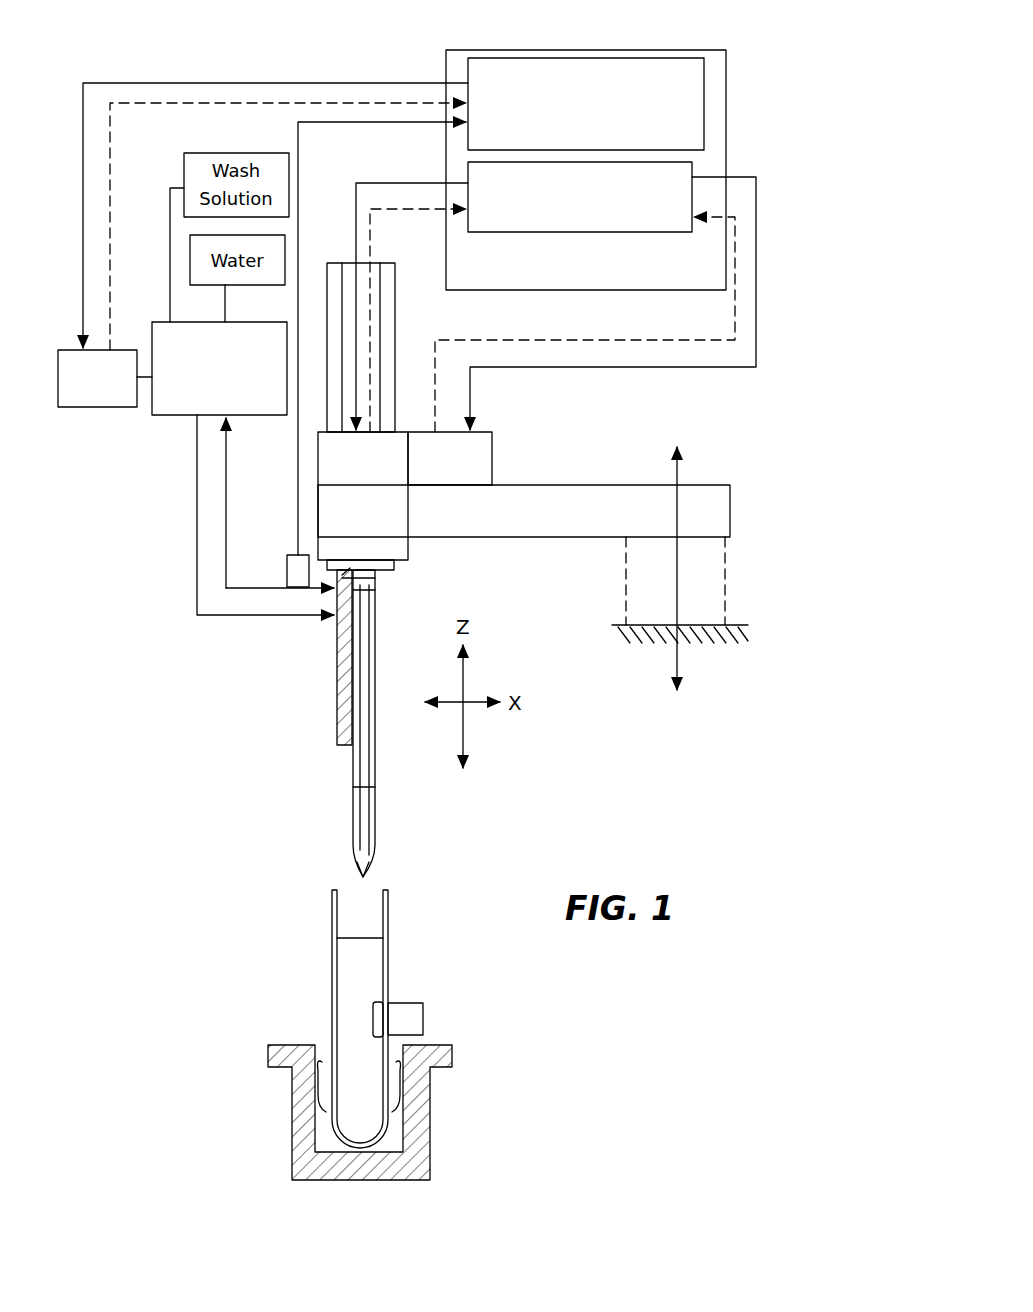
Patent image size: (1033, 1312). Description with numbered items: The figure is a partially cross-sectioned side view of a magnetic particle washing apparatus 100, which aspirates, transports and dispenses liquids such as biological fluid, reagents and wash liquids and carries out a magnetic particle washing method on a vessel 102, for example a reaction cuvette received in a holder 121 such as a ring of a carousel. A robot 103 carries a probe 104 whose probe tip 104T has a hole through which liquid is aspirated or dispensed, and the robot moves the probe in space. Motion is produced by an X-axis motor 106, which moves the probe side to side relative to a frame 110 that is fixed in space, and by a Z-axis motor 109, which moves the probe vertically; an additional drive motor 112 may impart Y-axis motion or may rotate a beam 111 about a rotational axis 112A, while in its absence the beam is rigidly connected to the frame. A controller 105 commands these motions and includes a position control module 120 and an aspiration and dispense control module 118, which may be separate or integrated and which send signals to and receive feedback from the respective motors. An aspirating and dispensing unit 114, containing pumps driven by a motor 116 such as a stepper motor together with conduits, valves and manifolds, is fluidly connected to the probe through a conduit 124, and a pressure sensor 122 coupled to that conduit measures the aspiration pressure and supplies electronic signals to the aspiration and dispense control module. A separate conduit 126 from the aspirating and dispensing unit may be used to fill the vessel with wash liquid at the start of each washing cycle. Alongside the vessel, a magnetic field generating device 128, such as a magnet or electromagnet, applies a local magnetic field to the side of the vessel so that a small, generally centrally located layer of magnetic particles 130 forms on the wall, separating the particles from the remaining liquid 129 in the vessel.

The magnetic particle washing apparatus 100 is at (229, 778).
The vessel 102 is at (392, 952).
The robot 103 is at (333, 260).
The probe 104 is at (343, 770).
The probe tip 104T is at (370, 872).
The controller 105 is at (575, 45).
The X-axis motor 106 is at (492, 433).
The Z-axis motor 109 is at (395, 462).
The frame 110 is at (622, 628).
The beam 111 is at (540, 484).
The additional drive motor 112 is at (626, 578).
The rotational axis 112A is at (680, 662).
The aspirating and dispensing unit 114 is at (172, 415).
The motor 116 is at (108, 407).
The aspiration and dispense control module 118 is at (704, 103).
The position control module 120 is at (645, 232).
The holder 121 is at (430, 1115).
The pressure sensor 122 is at (289, 555).
The conduit 124 is at (228, 490).
The conduit 126 is at (195, 540).
The magnetic field generating device 128 is at (424, 1015).
The remaining liquid 129 is at (345, 968).
The layer of magnetic particles 130 is at (372, 1012).